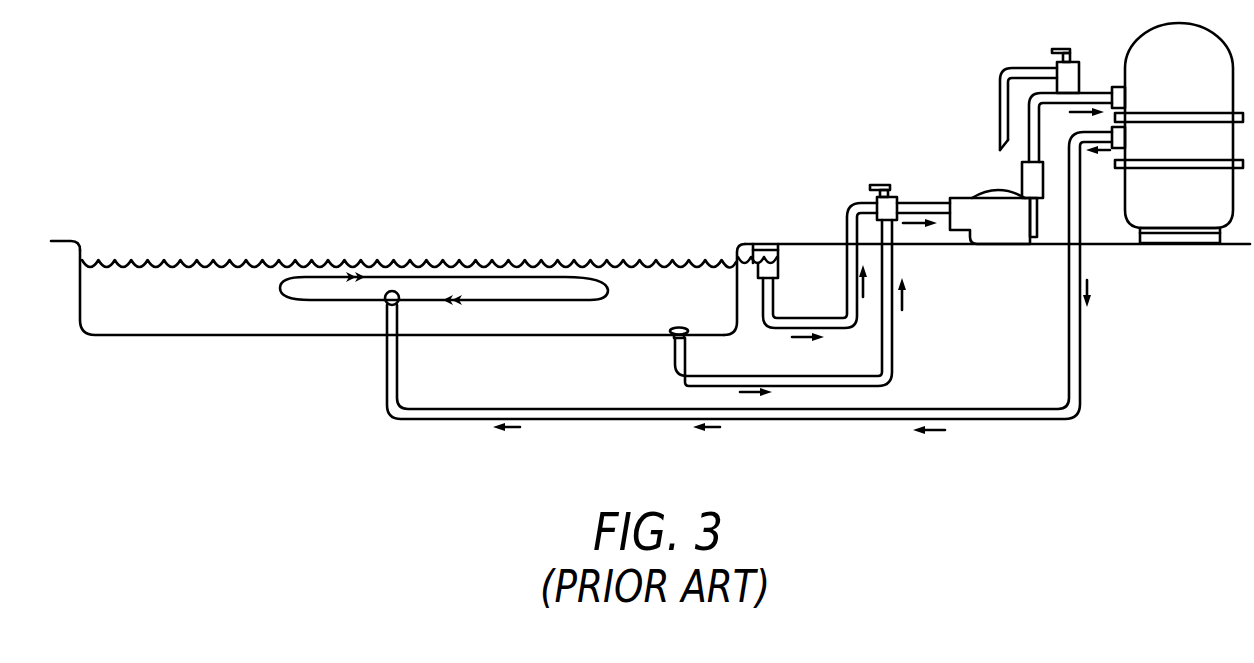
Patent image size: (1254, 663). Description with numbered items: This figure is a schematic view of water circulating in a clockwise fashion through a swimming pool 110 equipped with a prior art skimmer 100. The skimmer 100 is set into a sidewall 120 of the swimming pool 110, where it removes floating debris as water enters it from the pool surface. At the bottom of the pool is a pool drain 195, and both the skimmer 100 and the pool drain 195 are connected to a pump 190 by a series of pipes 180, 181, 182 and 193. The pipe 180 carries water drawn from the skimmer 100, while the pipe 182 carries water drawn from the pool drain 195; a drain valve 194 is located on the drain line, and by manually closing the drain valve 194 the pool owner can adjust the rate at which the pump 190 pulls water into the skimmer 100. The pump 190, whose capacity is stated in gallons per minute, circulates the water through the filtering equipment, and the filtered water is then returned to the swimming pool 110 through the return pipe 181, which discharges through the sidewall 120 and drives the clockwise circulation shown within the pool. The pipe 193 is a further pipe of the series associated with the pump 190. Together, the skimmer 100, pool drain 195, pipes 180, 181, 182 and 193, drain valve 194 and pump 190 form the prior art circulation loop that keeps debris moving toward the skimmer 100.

The skimmer 100 is at (760, 242).
The swimming pool 110 is at (203, 337).
The sidewall 120 is at (737, 300).
The pipe 180 is at (823, 317).
The pipe 181 is at (387, 368).
The pipe 182 is at (675, 357).
The pump 190 is at (1000, 190).
The pipe 193 is at (998, 102).
The drain valve 194 is at (883, 186).
The pool drain 195 is at (672, 330).